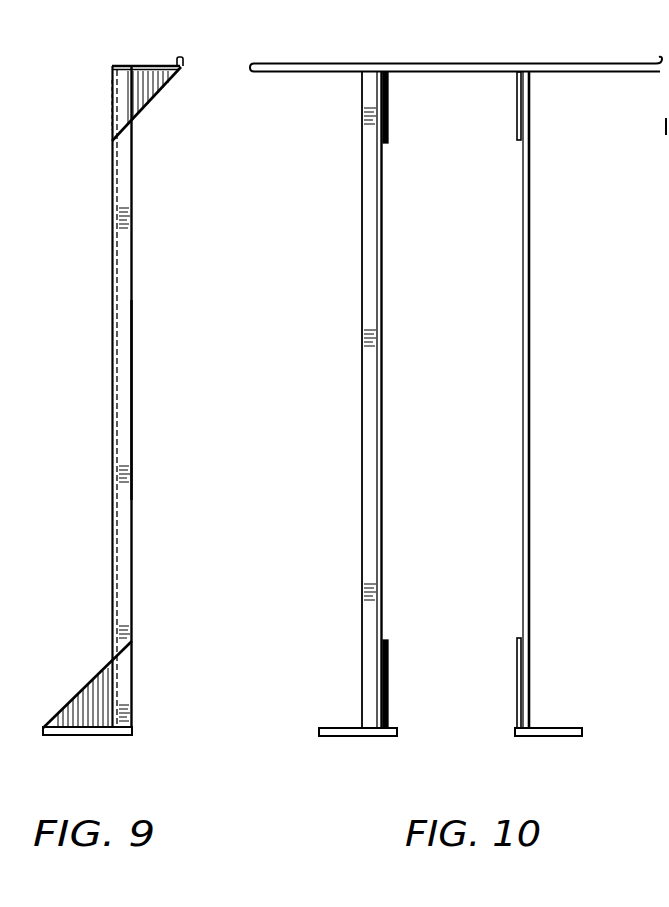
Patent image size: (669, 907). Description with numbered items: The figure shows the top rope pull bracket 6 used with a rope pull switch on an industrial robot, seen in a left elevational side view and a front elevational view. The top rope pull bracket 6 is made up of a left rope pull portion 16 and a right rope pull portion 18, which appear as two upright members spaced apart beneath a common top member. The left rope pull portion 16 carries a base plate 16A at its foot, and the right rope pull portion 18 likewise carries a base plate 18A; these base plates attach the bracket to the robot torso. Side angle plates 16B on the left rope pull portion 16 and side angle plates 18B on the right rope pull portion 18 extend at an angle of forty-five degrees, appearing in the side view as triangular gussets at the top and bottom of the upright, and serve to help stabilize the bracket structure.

In FIG. 9, the top rope pull bracket 6 is at (132, 428).
In FIG. 9, the left rope pull portion 16 is at (132, 608).
In FIG. 10, the left rope pull portion 16 is at (383, 395).
In FIG. 9, the base plate 16A is at (86, 738).
In FIG. 10, the base plate 16A is at (346, 738).
In FIG. 9, the side angle plate 16B is at (157, 102).
In FIG. 10, the side angle plate 16B is at (388, 128).
In FIG. 10, the right rope pull portion 18 is at (530, 408).
In FIG. 10, the base plate 18A is at (552, 738).
In FIG. 10, the side angle plate 18B is at (515, 120).